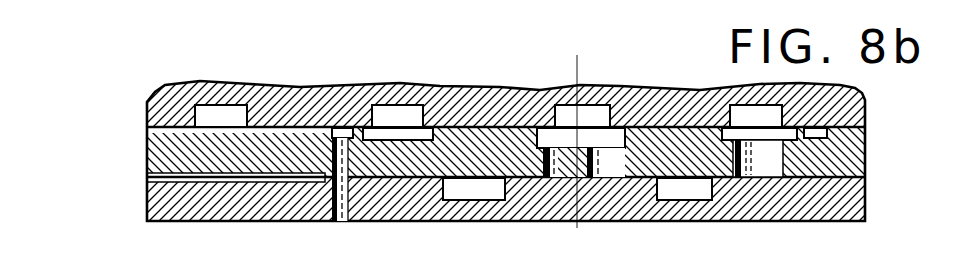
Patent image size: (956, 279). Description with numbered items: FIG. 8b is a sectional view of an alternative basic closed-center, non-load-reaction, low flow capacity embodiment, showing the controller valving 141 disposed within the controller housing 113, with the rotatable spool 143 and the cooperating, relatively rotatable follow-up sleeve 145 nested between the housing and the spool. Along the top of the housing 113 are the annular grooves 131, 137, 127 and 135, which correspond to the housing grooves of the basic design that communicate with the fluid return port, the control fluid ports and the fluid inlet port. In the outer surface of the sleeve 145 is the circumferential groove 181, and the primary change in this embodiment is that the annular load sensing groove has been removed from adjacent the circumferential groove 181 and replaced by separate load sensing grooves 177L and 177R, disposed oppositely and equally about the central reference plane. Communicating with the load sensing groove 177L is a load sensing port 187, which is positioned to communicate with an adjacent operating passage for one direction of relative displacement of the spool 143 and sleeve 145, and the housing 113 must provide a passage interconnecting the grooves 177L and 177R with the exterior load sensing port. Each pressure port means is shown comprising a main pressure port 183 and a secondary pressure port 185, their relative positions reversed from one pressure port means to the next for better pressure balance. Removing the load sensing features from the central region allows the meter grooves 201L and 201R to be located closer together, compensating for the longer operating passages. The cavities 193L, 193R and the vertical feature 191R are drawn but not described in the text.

The valving 141 is at (503, 148).
The controller housing 113 is at (846, 114).
The follow-up valve member (sleeve) 145 is at (846, 159).
The primary rotatable valve member (spool) 143 is at (846, 204).
The annular groove 131 is at (212, 104).
The annular groove 137 is at (387, 104).
The annular groove 127 is at (572, 104).
The annular groove 135 is at (744, 104).
The load sensing groove 177L is at (349, 131).
The load sensing groove 177R is at (823, 137).
The left cavity 193L is at (422, 138).
The right cavity 193R is at (722, 137).
The circumferential groove 181 is at (615, 140).
The load sensing port 187 is at (340, 164).
The secondary pressure port 185 is at (548, 177).
The main pressure port 183 is at (617, 172).
The right vertical conductor 191R is at (763, 168).
The meter groove 201L is at (475, 192).
The meter groove 201R is at (700, 193).